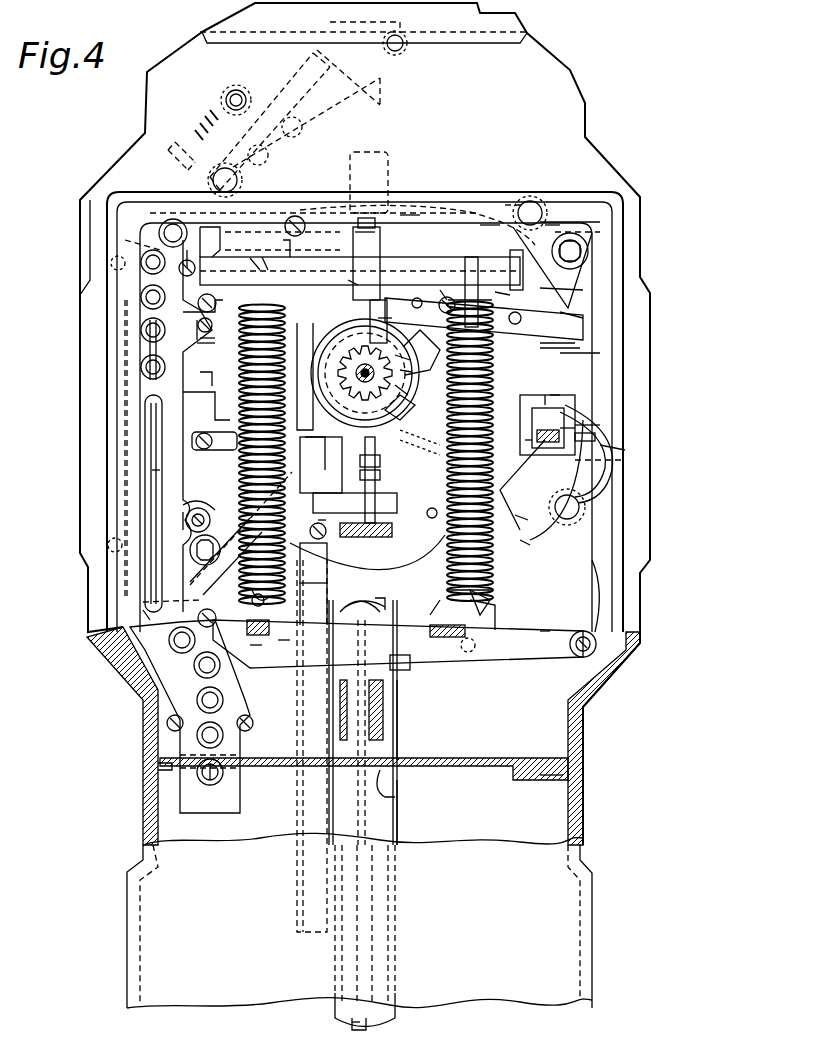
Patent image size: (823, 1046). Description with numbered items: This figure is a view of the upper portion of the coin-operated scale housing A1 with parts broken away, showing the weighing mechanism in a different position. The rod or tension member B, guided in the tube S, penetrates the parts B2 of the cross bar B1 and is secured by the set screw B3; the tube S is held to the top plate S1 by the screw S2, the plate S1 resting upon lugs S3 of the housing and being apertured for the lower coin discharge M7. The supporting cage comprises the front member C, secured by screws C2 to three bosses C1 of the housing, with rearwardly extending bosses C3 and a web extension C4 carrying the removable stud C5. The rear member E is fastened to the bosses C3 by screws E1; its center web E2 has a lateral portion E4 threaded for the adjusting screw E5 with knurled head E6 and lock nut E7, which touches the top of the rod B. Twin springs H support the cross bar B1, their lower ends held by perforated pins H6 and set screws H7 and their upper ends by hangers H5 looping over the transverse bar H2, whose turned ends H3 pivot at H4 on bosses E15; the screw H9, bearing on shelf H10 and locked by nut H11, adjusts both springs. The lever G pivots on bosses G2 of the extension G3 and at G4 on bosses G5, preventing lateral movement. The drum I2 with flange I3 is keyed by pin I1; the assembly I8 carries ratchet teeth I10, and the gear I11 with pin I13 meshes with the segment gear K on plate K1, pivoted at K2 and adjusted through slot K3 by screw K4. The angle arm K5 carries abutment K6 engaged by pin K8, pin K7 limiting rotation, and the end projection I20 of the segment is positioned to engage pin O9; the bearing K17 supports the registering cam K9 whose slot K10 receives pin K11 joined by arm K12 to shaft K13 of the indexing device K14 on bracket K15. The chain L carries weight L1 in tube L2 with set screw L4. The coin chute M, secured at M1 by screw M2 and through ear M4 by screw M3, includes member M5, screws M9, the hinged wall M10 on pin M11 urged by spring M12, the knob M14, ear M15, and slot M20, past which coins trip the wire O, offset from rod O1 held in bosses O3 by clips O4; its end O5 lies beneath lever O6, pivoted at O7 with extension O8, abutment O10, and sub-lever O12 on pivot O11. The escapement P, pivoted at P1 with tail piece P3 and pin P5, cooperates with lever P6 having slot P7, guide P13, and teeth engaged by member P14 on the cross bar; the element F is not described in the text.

The vertical housing member A1 is at (582, 733).
The rod or tension member B is at (367, 698).
The cross bar B1 is at (450, 660).
The parts of the bar B2 is at (400, 688).
The set screw B3 is at (403, 667).
The front part of supporting cage C is at (573, 275).
The bosses C1 is at (590, 238).
The screws C2 is at (589, 251).
The rearwardly extending bosses C3 is at (240, 181).
The web extension C4 is at (550, 228).
The stud C5 is at (538, 203).
The rear member E is at (200, 382).
The screws E1 is at (193, 554).
The center web E2 is at (375, 453).
The lateral portion E4 is at (393, 493).
The adjusting screw E5 is at (375, 468).
The knurled head E6 is at (382, 538).
The lock nut E7 is at (375, 482).
The bosses E15 is at (512, 205).
The plate F is at (600, 353).
The twin lever G is at (555, 658).
The bosses G2 is at (596, 636).
The lateral extension G3 is at (545, 631).
The pivot G4 is at (147, 614).
The bosses G5 is at (143, 602).
The twin springs H is at (600, 376).
The transverse bar H2 is at (423, 218).
The forwardly turned end portions H3 is at (187, 250).
The pivot H4 is at (515, 272).
The hangers H5 is at (489, 225).
The perforated pins H6 is at (253, 600).
The set screws H7 is at (256, 658).
The screw H9 is at (362, 232).
The shelf H10 is at (358, 258).
The lock nut H11 is at (415, 257).
The pin I1 is at (405, 347).
The drum I2 is at (568, 343).
The cylindrical flange I3 is at (577, 349).
The pulley and ratchet assembly I8 is at (323, 345).
The ratchet teeth I10 is at (410, 371).
The gear I11 is at (410, 360).
The pin I13 is at (355, 362).
The cam I20 is at (416, 403).
The segment gear K is at (410, 396).
The plate K1 is at (532, 410).
The pivot K2 is at (527, 545).
The adjusting slot K3 is at (545, 395).
The securing screw K4 is at (553, 395).
The angle arm K5 is at (512, 568).
The abutment member K6 is at (490, 610).
The pin K7 is at (432, 518).
The pin K8 is at (398, 600).
The registering cam K9 is at (612, 472).
The cam slot K10 is at (623, 460).
The pin K11 is at (595, 437).
The arm K12 is at (575, 428).
The shaft K13 is at (625, 450).
The indexing device K14 is at (600, 425).
The bracket structure K15 is at (525, 440).
The bearing K17 is at (525, 520).
The cable or chain L is at (315, 437).
The weight L1 is at (330, 592).
The tube L2 is at (300, 722).
The set screw L4 is at (312, 446).
The coin chute structure M is at (143, 387).
The attachment point M1 is at (200, 508).
The screw M2 is at (186, 520).
The screw M3 is at (198, 300).
The ear M4 is at (183, 312).
The chute member M5 is at (400, 55).
The bottom coin discharge M7 is at (143, 460).
The screws M9 is at (110, 263).
The hinged wall portion M10 is at (383, 83).
The pivot pin M11 is at (270, 100).
The spring M12 is at (223, 128).
The exterior knob M14 is at (237, 88).
The ear M15 is at (227, 92).
The longitudinal slot M20 is at (148, 443).
The trip member O is at (152, 478).
The horizontal rod portion O1 is at (212, 340).
The bosses O3 is at (197, 343).
The cover clips O4 is at (378, 300).
The end of trip member O5 is at (390, 319).
The trip lever O6 is at (575, 317).
The pivot O7 is at (449, 298).
The lateral angular extension O8 is at (353, 278).
The pin O9 is at (517, 324).
The abutment O10 is at (510, 295).
The pivot O11 is at (418, 298).
The sub-lever O12 is at (443, 288).
The escapement member P is at (318, 228).
The pivot P1 is at (297, 216).
The tail piece P3 is at (212, 328).
The pin P5 is at (266, 266).
The escapement lever P6 is at (206, 372).
The slot P7 is at (283, 239).
The guide P13 is at (215, 426).
The member P14 is at (282, 658).
The tube S is at (397, 720).
The top plate S1 is at (480, 758).
The screw S2 is at (397, 787).
The lugs S3 is at (167, 770).